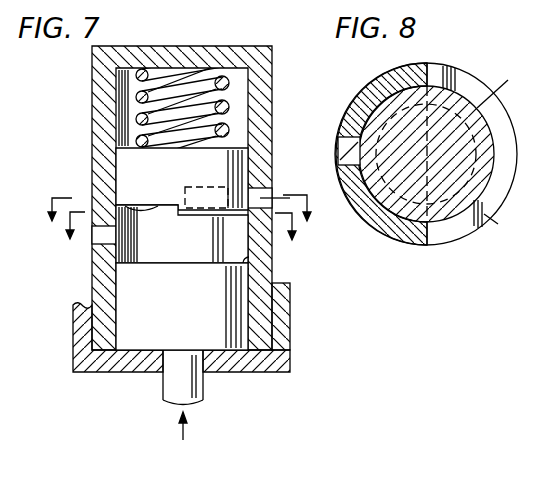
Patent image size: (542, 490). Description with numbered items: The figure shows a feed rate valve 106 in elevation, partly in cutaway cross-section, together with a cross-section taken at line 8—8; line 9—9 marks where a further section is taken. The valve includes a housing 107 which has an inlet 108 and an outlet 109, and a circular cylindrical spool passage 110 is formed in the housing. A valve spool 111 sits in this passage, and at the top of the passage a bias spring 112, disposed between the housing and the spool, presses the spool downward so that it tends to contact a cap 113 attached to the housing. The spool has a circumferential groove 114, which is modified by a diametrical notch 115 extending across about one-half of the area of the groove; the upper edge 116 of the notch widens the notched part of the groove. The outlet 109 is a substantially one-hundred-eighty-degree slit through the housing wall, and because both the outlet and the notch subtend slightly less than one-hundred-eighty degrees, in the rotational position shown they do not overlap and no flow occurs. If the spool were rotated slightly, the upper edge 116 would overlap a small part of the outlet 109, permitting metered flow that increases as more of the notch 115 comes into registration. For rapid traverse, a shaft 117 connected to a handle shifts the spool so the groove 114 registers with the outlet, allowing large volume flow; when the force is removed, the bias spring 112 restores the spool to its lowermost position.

In FIG. 7, the feed rate valve 106 is at (179, 209).
In FIG. 8, the feed rate valve 106 is at (470, 70).
In FIG. 7, the housing 107 is at (272, 99).
In FIG. 7, the inlet 108 is at (94, 243).
In FIG. 8, the inlet 108 is at (340, 141).
In FIG. 7, the outlet 109 is at (276, 193).
In FIG. 8, the outlet 109 is at (496, 220).
In FIG. 7, the spool passage 110 is at (250, 268).
In FIG. 7, the valve spool 111 is at (116, 134).
In FIG. 8, the valve spool 111 is at (508, 80).
In FIG. 7, the bias spring 112 is at (228, 80).
In FIG. 7, the cap 113 is at (292, 322).
In FIG. 7, the circumferential groove 114 is at (190, 266).
In FIG. 7, the diametrical notch 115 is at (178, 205).
In FIG. 8, the diametrical notch 115 is at (406, 218).
In FIG. 7, the upper edge 116 is at (118, 206).
In FIG. 7, the shaft 117 is at (204, 386).
In FIG. 7, the section line 8— 8 is at (177, 218).
In FIG. 7, the section line 9— 9 is at (179, 237).